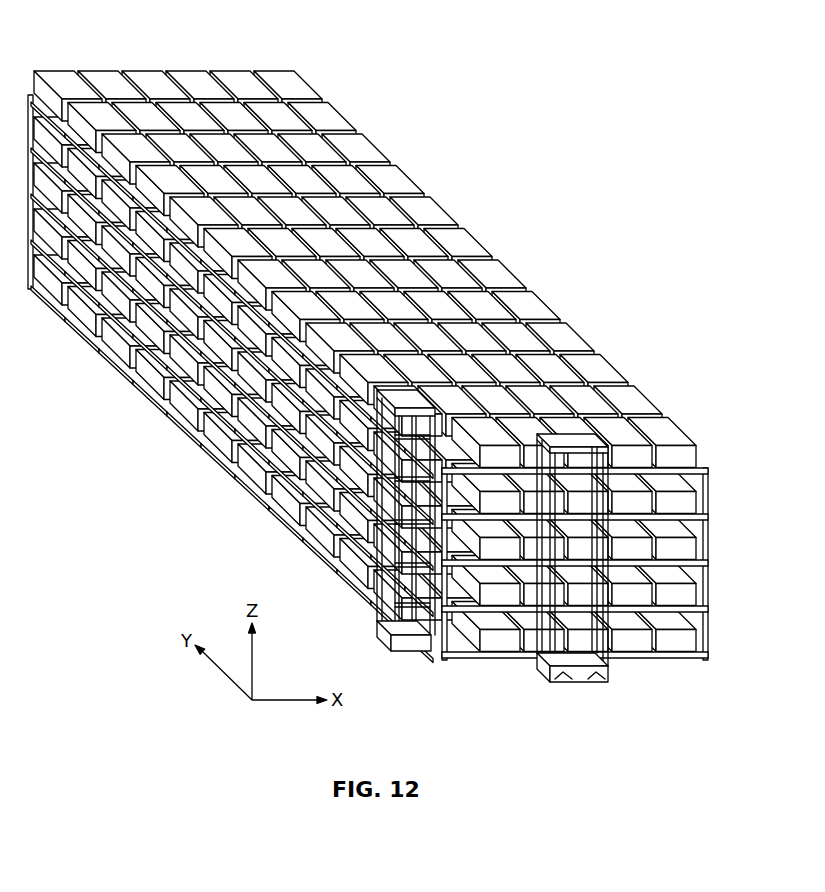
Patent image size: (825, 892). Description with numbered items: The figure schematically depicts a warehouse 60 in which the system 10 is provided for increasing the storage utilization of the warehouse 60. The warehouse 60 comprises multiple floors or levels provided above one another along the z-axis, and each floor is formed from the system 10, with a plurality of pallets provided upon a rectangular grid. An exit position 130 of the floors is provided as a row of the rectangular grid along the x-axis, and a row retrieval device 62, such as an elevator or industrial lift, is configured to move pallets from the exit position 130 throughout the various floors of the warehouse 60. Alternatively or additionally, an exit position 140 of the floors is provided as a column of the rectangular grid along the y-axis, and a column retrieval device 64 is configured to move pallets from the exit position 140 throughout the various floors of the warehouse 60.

The warehouse 60 is at (397, 398).
The system 10 is at (397, 367).
The exit position 130 is at (678, 432).
The exit position 140 is at (265, 273).
The row retrieval device 62 is at (578, 673).
The column retrieval device 64 is at (404, 655).